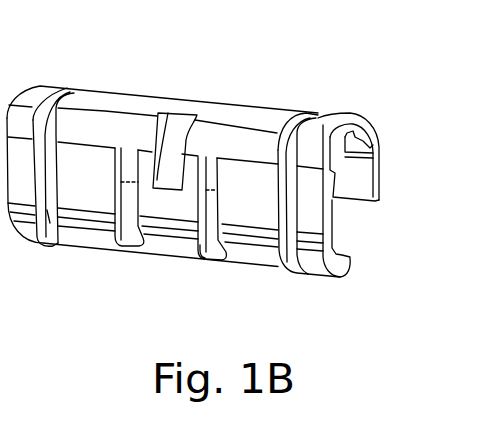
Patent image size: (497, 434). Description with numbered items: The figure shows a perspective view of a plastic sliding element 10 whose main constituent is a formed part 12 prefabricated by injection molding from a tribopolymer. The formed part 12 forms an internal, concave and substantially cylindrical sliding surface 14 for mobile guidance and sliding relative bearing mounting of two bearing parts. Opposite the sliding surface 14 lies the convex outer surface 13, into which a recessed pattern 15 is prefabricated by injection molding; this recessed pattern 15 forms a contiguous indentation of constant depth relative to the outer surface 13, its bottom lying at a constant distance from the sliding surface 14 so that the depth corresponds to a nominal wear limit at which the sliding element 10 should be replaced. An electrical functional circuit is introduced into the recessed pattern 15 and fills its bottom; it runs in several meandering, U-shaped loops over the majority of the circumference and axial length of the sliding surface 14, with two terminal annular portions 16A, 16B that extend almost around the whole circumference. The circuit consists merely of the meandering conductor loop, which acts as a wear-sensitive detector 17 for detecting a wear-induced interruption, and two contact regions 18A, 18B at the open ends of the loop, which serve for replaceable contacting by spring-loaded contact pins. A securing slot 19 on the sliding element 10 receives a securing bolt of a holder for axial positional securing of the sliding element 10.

The sliding element 10 is at (281, 78).
The formed part 12 is at (108, 100).
The outer surface 13 is at (90, 205).
The sliding surface 14 is at (367, 180).
The recessed pattern 15 is at (213, 237).
The terminal annular portion 16A is at (40, 237).
The terminal annular portion 16B is at (290, 232).
The wear-sensitive detector 17 is at (288, 172).
The contact region 18A is at (128, 170).
The contact region 18B is at (216, 157).
The securing slot 19 is at (167, 172).